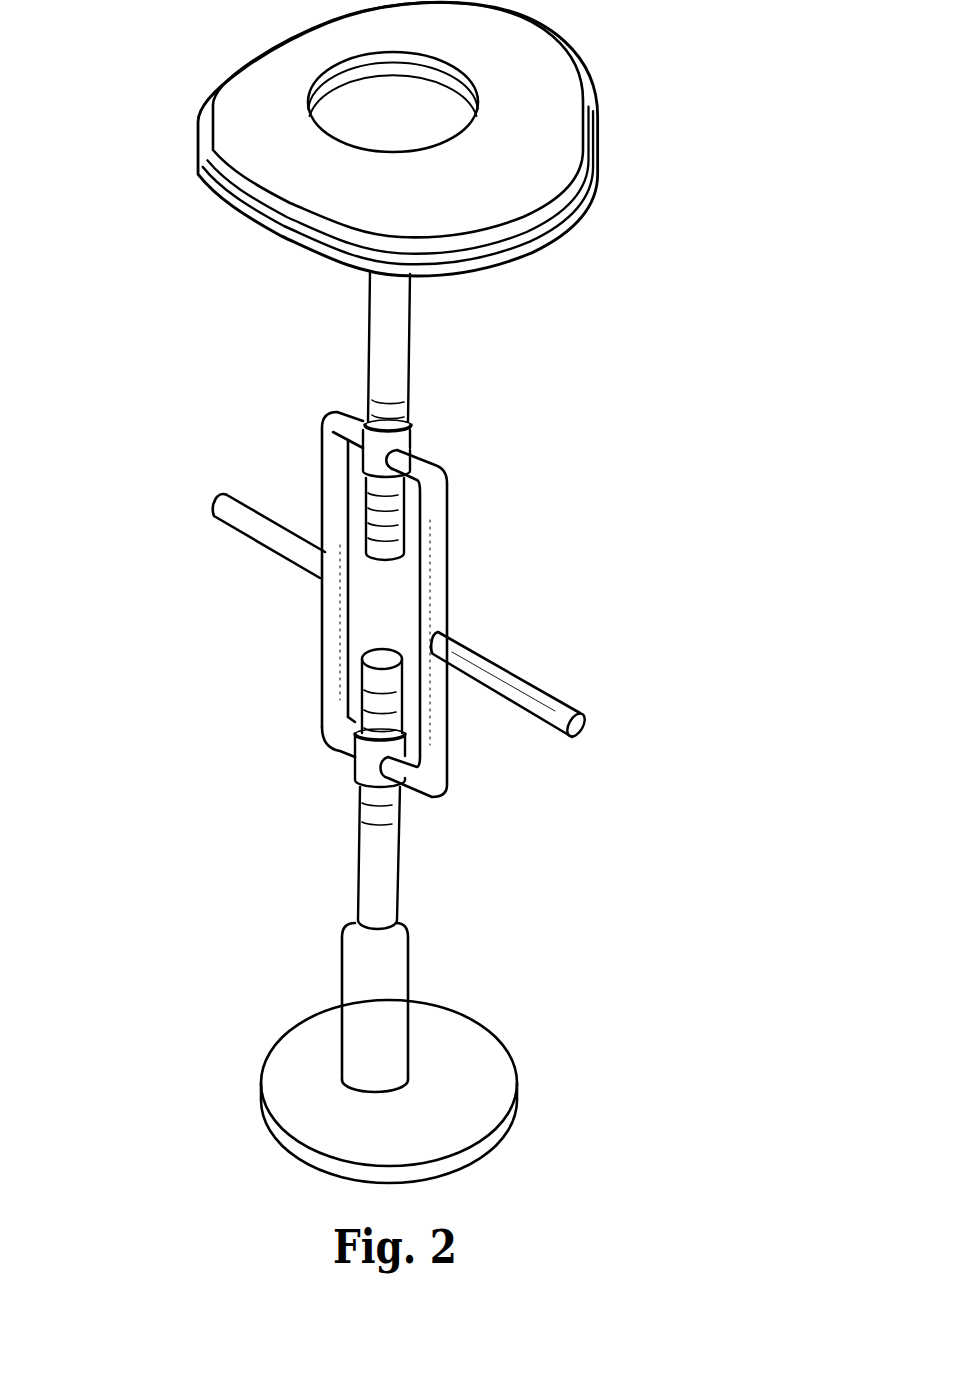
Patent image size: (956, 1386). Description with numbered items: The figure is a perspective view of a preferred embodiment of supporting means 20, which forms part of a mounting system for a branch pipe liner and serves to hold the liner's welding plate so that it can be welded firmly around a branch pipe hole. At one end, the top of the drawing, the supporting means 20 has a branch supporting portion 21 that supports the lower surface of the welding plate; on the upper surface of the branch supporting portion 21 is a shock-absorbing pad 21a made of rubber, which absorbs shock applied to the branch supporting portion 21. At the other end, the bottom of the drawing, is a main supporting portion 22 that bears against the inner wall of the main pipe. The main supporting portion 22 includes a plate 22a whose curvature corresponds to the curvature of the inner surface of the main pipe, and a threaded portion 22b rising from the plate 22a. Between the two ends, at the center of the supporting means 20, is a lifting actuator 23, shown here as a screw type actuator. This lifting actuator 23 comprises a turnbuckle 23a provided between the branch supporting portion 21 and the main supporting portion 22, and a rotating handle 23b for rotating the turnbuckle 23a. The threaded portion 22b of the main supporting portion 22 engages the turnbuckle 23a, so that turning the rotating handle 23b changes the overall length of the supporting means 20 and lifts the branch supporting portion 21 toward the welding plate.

The supporting means 20 is at (235, 425).
The branch supporting portion 21 is at (537, 284).
The shock-absorbing pad 21a is at (523, 100).
The main supporting portion 22 is at (472, 1000).
The plate 22a is at (493, 1141).
The threaded portion 22b is at (342, 953).
The lifting actuator 23 is at (480, 578).
The turnbuckle 23a is at (448, 484).
The rotating handle 23b is at (550, 697).